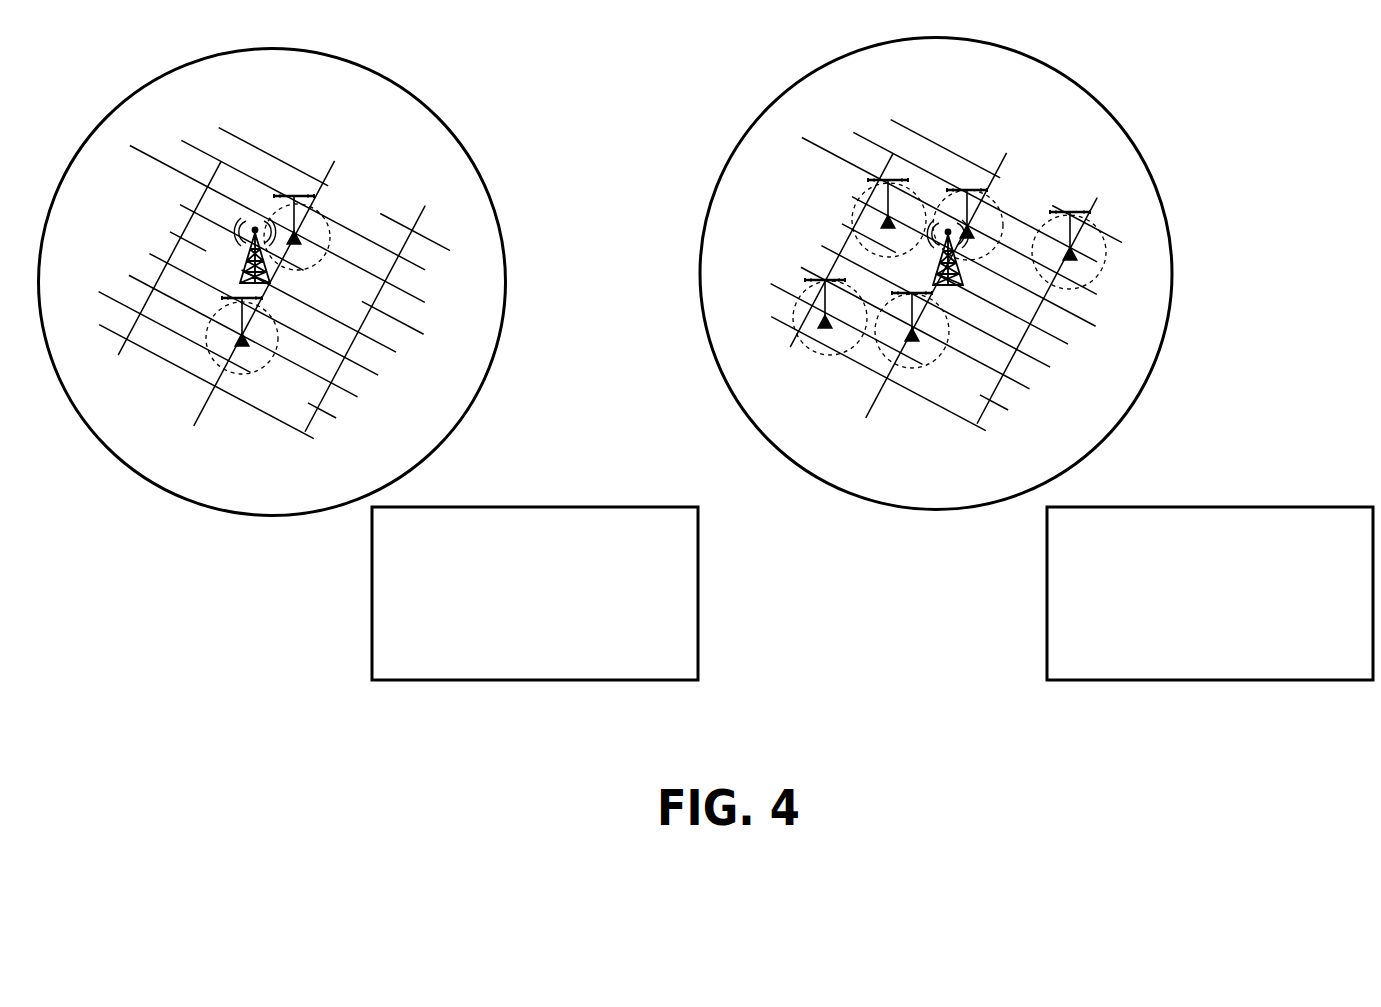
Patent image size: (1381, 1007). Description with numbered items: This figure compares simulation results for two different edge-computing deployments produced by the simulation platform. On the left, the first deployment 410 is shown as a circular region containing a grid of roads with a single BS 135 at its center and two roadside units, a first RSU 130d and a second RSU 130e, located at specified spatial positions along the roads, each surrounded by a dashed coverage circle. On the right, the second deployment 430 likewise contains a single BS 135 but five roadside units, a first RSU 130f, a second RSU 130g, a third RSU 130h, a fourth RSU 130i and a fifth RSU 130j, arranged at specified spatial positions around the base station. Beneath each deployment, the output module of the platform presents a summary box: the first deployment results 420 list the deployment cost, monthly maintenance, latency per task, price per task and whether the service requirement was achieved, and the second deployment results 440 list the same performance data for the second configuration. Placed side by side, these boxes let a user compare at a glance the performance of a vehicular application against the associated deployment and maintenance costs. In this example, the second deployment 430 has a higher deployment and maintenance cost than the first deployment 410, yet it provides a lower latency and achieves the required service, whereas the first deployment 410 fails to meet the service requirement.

The Deployment 1 410 is at (418, 97).
The Deployment 1 results 420 is at (552, 507).
The Deployment 2 430 is at (1065, 76).
The Deployment 2 results 440 is at (1222, 507).
The BS 135 is at (248, 253).
The RSU 1 130d is at (330, 196).
The RSU 2 130e is at (200, 340).
The RSU 1 130f is at (853, 207).
The RSU 2 130g is at (963, 190).
The RSU 3 130h is at (1100, 228).
The RSU 4 130i is at (823, 355).
The RSU 5 130j is at (960, 332).